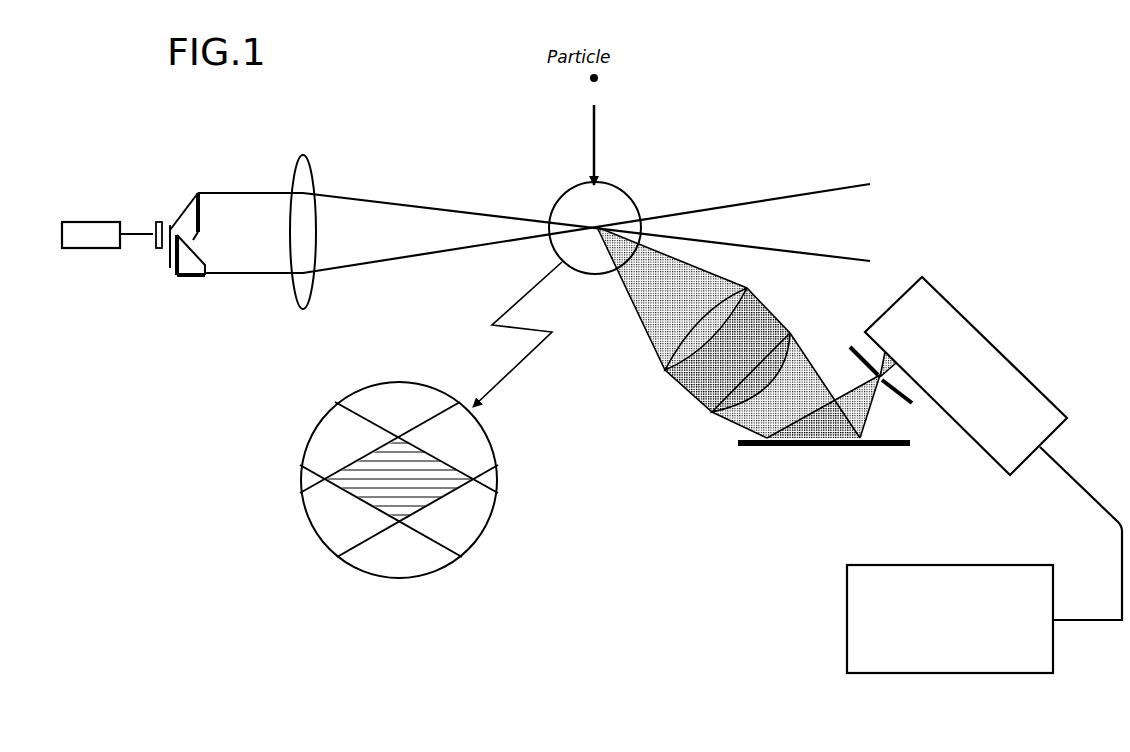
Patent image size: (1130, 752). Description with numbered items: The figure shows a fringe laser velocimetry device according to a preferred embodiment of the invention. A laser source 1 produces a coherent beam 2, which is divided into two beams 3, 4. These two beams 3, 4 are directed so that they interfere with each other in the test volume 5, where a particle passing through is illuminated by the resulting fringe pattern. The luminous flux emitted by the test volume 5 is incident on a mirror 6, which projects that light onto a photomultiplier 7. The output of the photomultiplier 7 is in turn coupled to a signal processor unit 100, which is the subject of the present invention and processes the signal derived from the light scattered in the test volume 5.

The laser source 1 is at (94, 232).
The coherent beam 2 is at (231, 210).
The beam 3 is at (421, 206).
The beam 4 is at (416, 262).
The test volume 5 is at (625, 187).
The mirror 6 is at (737, 447).
The photomultiplier 7 is at (1007, 353).
The signal processor unit 100 is at (847, 608).